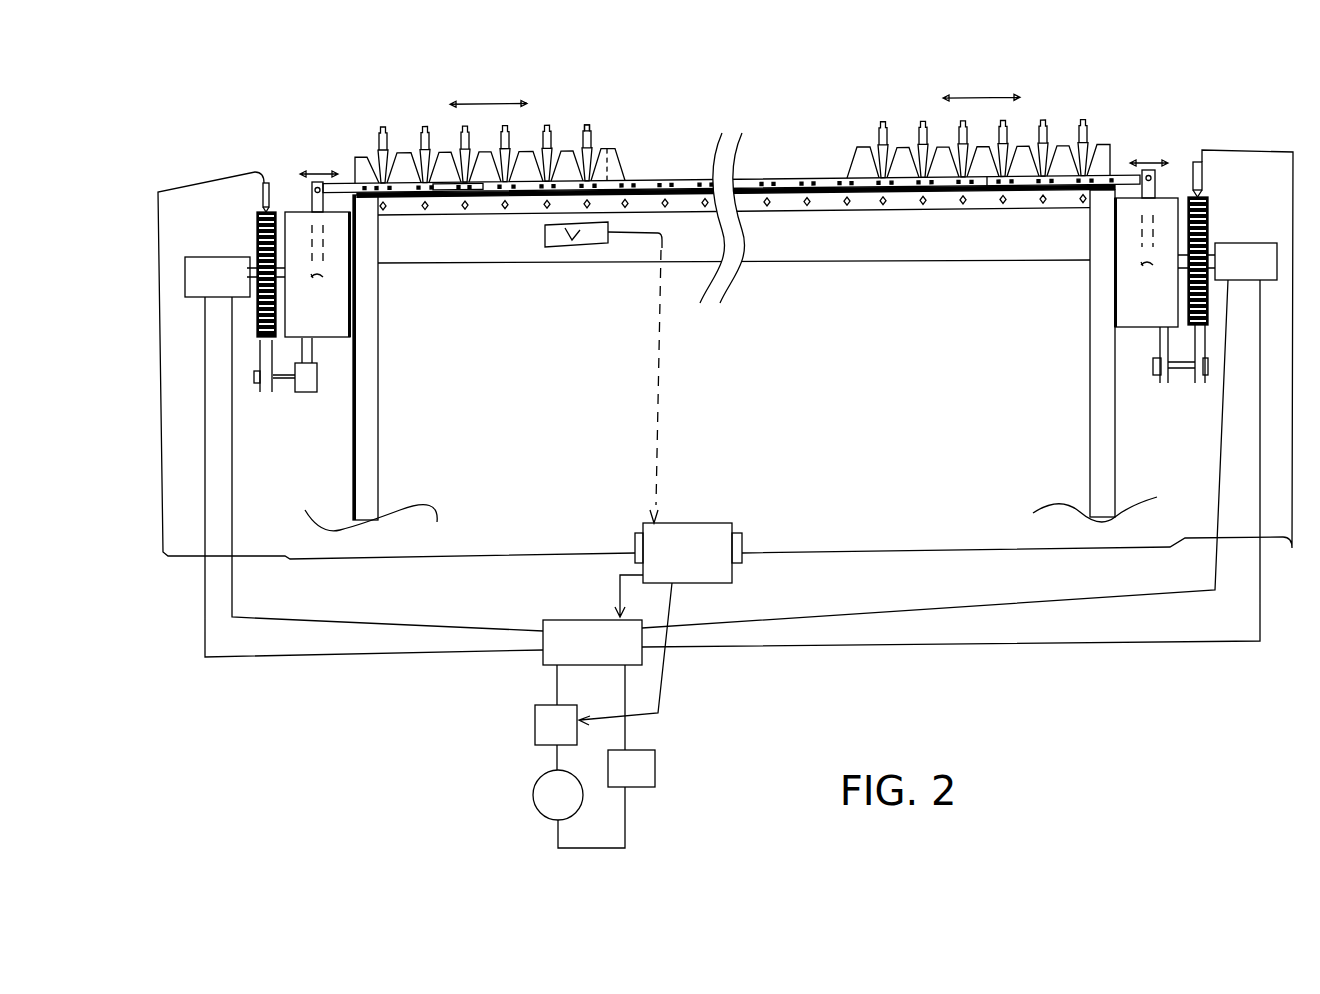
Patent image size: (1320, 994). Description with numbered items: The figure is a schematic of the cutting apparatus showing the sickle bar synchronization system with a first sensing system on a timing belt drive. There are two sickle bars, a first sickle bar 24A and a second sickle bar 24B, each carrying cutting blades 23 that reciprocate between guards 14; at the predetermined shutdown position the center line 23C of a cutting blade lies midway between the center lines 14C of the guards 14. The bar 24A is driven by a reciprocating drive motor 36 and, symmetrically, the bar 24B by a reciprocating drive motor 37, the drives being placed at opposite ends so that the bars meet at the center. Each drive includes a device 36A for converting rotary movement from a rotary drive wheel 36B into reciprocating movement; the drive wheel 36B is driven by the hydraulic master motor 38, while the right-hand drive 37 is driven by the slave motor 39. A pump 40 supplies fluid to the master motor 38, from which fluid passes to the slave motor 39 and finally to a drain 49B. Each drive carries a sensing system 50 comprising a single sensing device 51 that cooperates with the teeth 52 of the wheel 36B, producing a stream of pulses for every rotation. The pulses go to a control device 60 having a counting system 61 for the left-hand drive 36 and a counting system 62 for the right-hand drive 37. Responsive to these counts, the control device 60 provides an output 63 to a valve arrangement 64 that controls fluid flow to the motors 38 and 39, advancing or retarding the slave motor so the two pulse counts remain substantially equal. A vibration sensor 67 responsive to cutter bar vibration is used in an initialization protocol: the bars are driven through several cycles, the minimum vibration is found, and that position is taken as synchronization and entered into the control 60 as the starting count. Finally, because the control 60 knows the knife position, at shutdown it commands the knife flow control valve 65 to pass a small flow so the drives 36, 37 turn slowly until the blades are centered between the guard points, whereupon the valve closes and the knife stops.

The guards 14 is at (590, 150).
The center lines of the guards 14C is at (584, 122).
The cutting blades 23 is at (608, 166).
The center line of the cutting blade 23C is at (621, 165).
The first sickle bar 24A is at (400, 186).
The second sickle bar 24B is at (1003, 185).
The reciprocating drive motor 36 is at (290, 139).
The device for converting rotary movement 36A is at (337, 307).
The rotary drive wheel 36B is at (276, 309).
The reciprocating drive motor 37 is at (1181, 137).
The hydraulic master motor 38 is at (230, 257).
The slave motor 39 is at (1258, 248).
The pump 40 is at (537, 796).
The drain 49B is at (641, 778).
The sensing system 50 is at (248, 146).
The sensing device 51 is at (263, 185).
The teeth 52 is at (258, 214).
The control device 60 is at (667, 522).
The counting system 61 is at (636, 535).
The counting system 62 is at (740, 535).
The output 63 is at (618, 587).
The valve arrangement 64 is at (548, 620).
The knife flow control valve 65 is at (535, 724).
The vibration sensor 67 is at (556, 244).